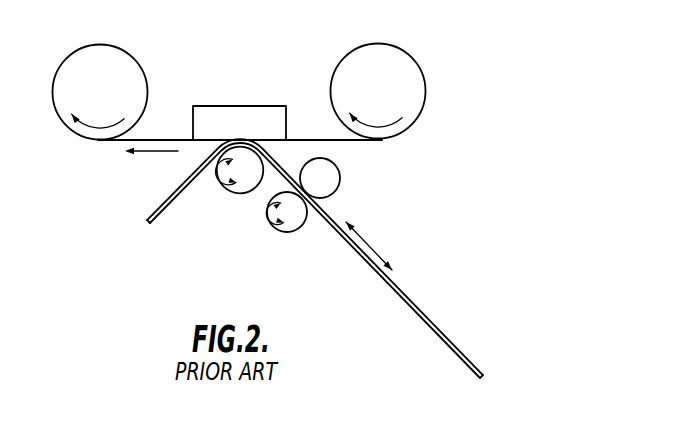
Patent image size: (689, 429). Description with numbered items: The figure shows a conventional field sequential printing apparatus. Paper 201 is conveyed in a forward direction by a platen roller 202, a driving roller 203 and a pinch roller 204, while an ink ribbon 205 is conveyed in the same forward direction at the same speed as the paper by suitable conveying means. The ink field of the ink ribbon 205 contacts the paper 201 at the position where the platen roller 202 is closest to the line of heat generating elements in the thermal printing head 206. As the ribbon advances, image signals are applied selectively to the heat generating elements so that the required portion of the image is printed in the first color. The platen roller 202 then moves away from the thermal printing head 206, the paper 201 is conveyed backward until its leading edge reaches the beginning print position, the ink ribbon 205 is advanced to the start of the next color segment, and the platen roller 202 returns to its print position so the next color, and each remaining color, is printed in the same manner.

The paper 201 is at (438, 330).
The platen roller 202 is at (237, 194).
The driving roller 203 is at (292, 232).
The pinch roller 204 is at (331, 177).
The ink ribbon 205 is at (165, 138).
The thermal printing head 206 is at (265, 106).